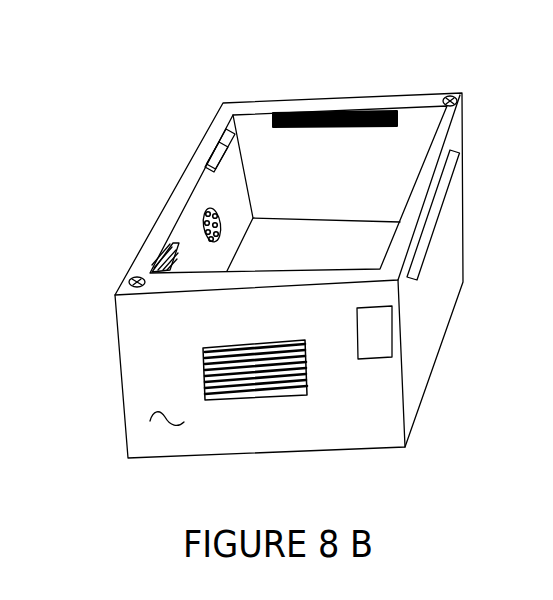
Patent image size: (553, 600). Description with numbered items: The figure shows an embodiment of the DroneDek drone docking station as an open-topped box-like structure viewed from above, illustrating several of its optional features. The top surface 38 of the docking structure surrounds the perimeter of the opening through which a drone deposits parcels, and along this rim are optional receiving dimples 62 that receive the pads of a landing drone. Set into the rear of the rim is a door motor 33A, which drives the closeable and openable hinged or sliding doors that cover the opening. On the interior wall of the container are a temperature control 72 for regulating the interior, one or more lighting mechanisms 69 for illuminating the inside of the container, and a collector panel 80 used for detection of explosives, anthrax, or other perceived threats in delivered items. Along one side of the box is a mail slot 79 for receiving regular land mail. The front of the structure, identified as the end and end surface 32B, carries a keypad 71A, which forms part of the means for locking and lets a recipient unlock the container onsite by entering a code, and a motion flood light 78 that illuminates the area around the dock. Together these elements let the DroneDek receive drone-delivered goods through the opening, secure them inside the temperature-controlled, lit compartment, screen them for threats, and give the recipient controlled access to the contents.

The top surface 38 is at (190, 180).
The door motor 33A is at (362, 111).
The temperature control 72 is at (224, 147).
The lighting mechanism 69 is at (204, 222).
The collector panel 80 is at (162, 253).
The receiving dimples 62 is at (128, 283).
The mail slot 79 is at (452, 183).
The keypad 71A is at (383, 342).
The motion flood light 78 is at (245, 398).
The end surface 32B is at (168, 427).